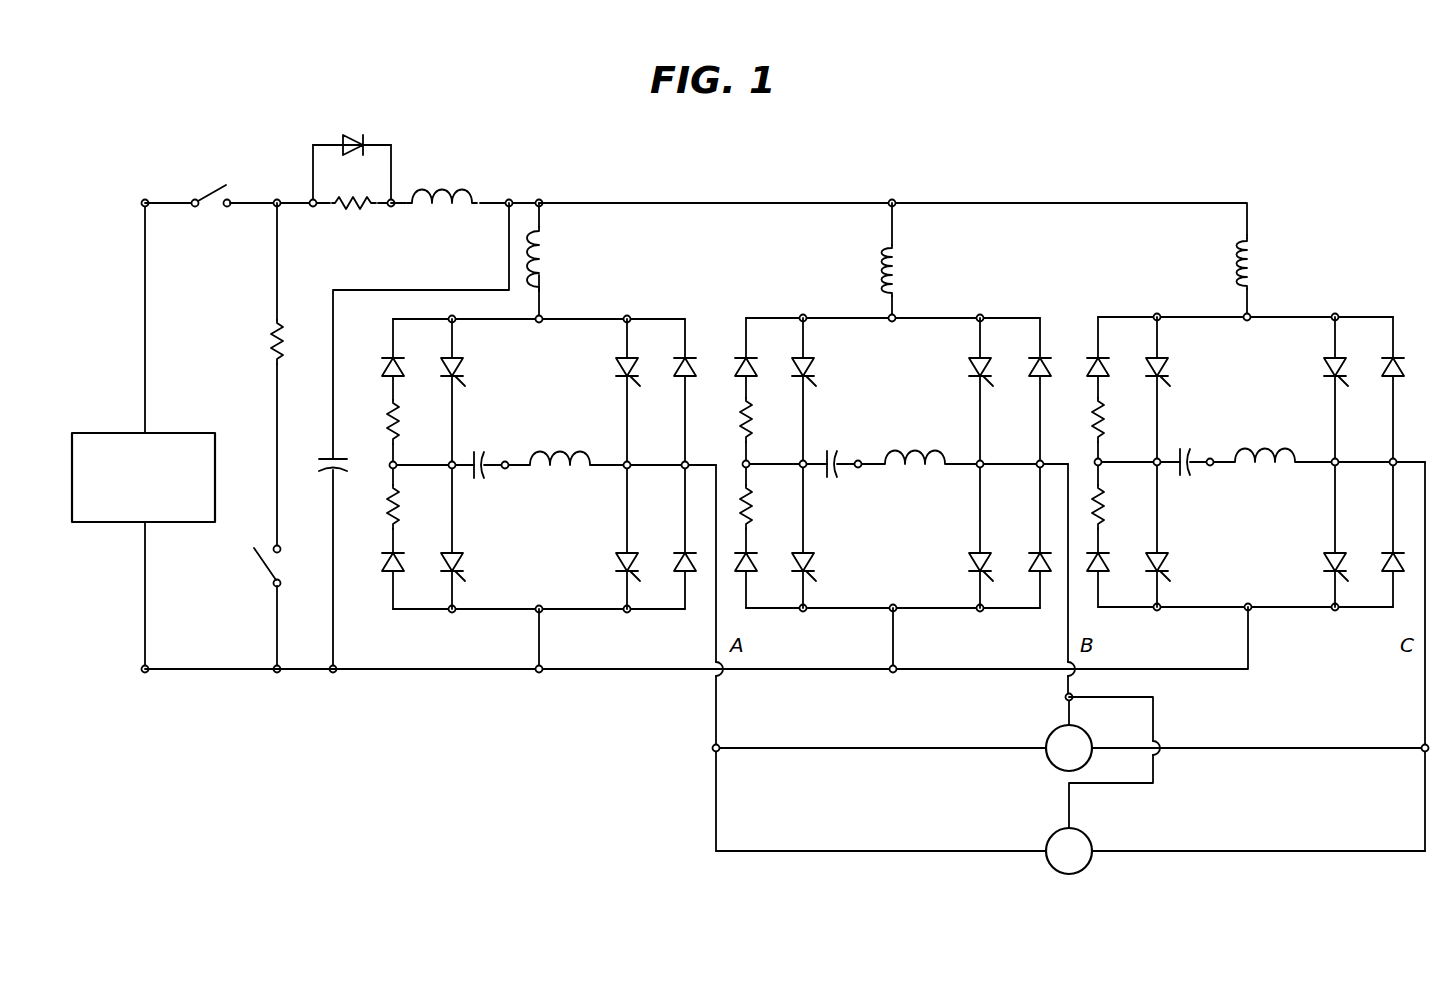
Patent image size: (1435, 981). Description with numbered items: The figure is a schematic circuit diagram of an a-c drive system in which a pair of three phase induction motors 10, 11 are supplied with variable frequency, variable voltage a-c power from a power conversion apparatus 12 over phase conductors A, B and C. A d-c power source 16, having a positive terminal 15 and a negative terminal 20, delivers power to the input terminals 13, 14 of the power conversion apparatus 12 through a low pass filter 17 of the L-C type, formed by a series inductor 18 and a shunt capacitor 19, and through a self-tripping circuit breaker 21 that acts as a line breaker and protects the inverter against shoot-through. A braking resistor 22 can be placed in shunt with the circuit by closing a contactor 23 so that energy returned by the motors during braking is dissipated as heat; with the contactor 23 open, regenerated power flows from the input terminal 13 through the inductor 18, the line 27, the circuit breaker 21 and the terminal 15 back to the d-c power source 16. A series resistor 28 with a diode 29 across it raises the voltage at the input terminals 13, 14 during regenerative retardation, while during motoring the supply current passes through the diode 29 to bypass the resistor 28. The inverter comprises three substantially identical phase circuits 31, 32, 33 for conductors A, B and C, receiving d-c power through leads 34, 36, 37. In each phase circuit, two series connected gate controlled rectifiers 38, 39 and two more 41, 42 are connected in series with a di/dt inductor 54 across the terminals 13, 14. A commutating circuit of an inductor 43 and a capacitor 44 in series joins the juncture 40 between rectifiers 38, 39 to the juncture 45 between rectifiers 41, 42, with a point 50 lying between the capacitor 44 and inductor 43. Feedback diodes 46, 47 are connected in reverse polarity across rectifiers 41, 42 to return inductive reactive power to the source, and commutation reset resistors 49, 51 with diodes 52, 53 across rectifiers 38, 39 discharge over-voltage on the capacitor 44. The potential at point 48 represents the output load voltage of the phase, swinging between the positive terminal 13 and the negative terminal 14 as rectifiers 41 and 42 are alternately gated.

The three phase induction motor 10 is at (1050, 735).
The three phase induction motor 11 is at (1050, 838).
The power conversion apparatus 12 is at (717, 246).
The input terminal 13 is at (539, 203).
The input terminal 14 is at (540, 669).
The positive terminal 15 is at (145, 203).
The d-c power source 16 is at (83, 433).
The low pass filter 17 is at (425, 171).
The inductor 18 is at (455, 190).
The capacitor 19 is at (333, 463).
The negative terminal 20 is at (145, 669).
The self-tripping circuit breaker 21 is at (205, 195).
The braking resistor 22 is at (277, 340).
The contactor 23 is at (262, 570).
The line 27 is at (405, 208).
The series resistor 28 is at (352, 210).
The diode 29 is at (356, 138).
The phase circuit 31 is at (537, 472).
The phase circuit 32 is at (900, 370).
The phase circuit 33 is at (1247, 370).
The lead 34 is at (560, 217).
The lead 36 is at (892, 238).
The lead 37 is at (1247, 230).
The gate controlled rectifier 38 is at (457, 374).
The gate controlled rectifier 39 is at (462, 566).
The juncture 40 is at (452, 466).
The gate controlled rectifier 41 is at (620, 372).
The gate controlled rectifier 42 is at (617, 566).
The inductor 43 is at (560, 468).
The capacitor 44 is at (483, 450).
The juncture 45 is at (627, 466).
The commutating and load current feedback diode 46 is at (690, 360).
The commutating and load current feedback diode 47 is at (683, 558).
The point 48 is at (685, 466).
The commutation reset resistor 49 is at (388, 432).
The point 50 is at (507, 464).
The commutation reset resistor 51 is at (392, 520).
The diode 52 is at (385, 362).
The diode 53 is at (390, 578).
The di/dt inductor 54 is at (552, 283).